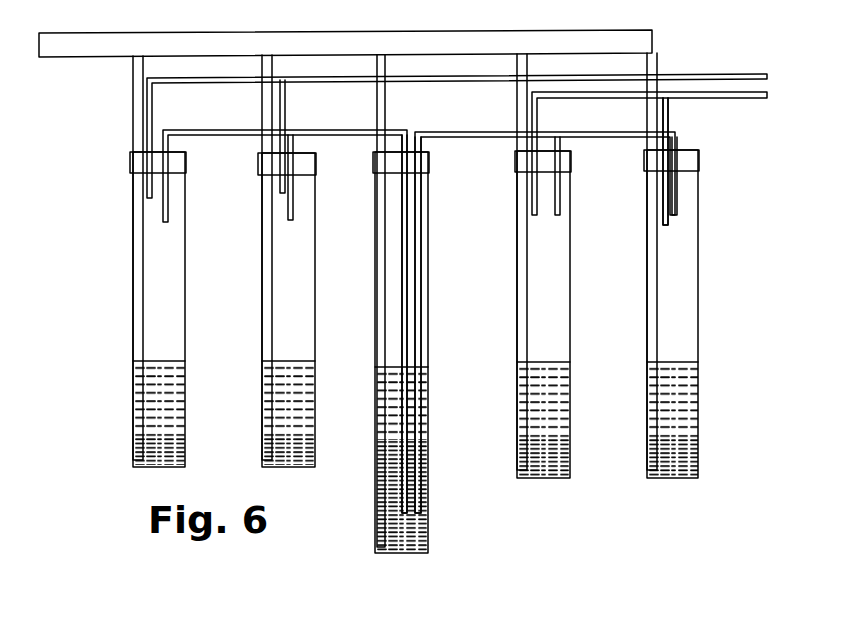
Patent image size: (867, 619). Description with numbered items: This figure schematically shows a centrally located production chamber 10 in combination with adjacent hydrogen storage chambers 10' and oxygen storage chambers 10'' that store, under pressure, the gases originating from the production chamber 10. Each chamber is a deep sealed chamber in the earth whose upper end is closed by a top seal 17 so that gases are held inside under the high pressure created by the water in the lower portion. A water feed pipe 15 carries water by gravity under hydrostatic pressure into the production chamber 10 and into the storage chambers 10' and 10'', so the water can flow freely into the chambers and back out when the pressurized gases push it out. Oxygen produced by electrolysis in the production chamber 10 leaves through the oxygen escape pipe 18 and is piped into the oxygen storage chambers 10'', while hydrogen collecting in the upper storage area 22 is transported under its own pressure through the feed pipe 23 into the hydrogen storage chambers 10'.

The production chamber 10 is at (434, 352).
The hydrogen storage chamber 10' is at (639, 314).
The oxygen storage chamber 10'' is at (178, 309).
The water feed pipe 15 is at (132, 118).
The top seal 17 is at (177, 163).
The oxygen escape pipe 18 is at (347, 128).
The upper storage area 22 is at (395, 220).
The feed pipe 23 is at (480, 131).